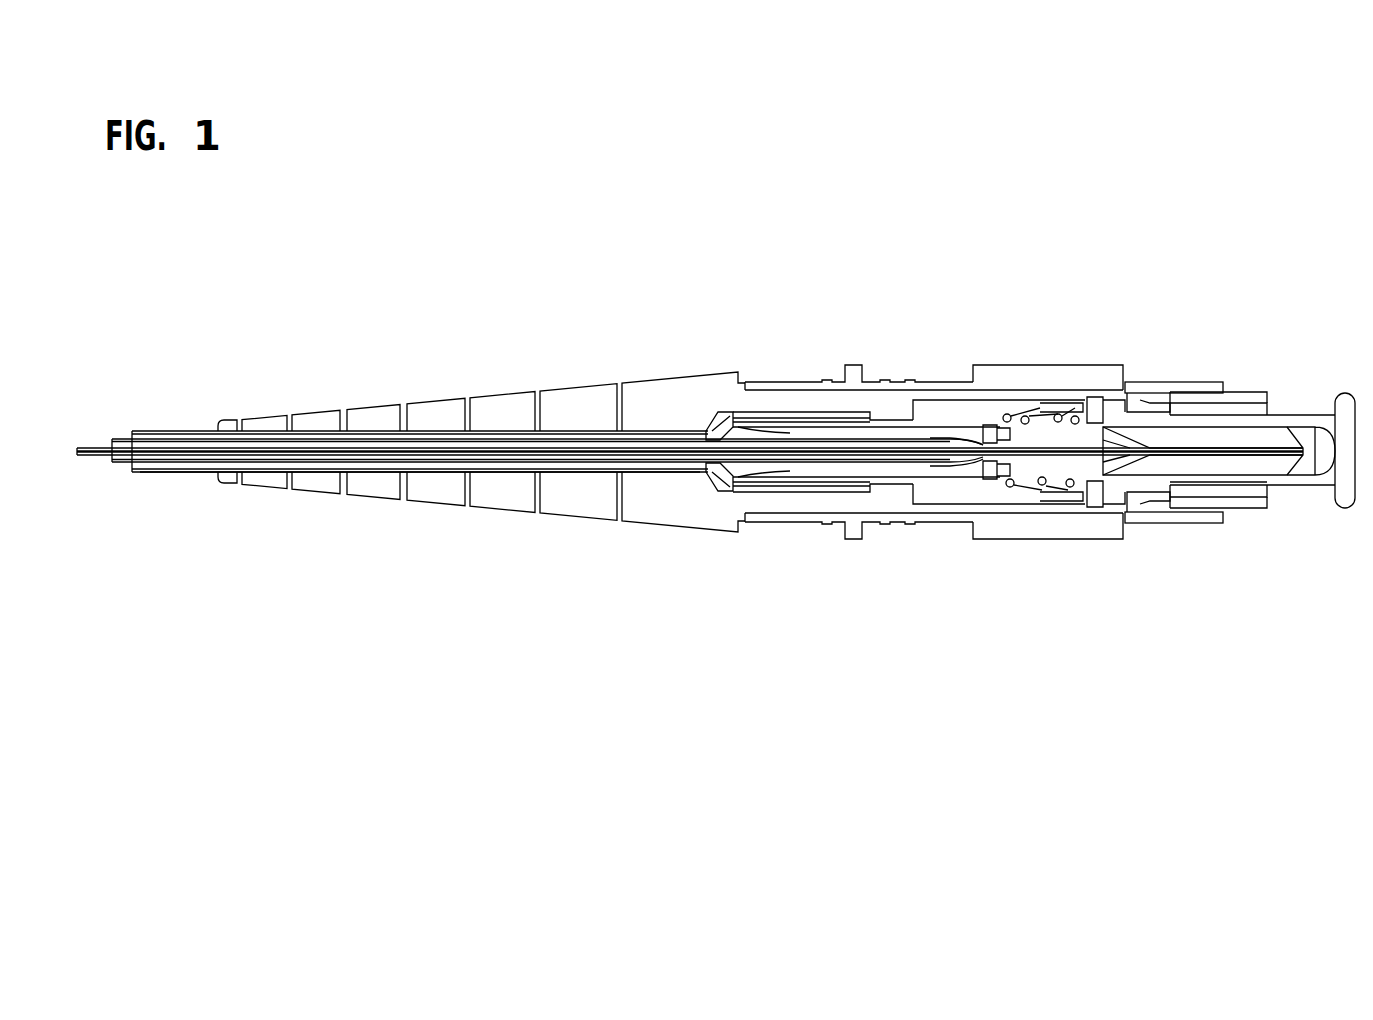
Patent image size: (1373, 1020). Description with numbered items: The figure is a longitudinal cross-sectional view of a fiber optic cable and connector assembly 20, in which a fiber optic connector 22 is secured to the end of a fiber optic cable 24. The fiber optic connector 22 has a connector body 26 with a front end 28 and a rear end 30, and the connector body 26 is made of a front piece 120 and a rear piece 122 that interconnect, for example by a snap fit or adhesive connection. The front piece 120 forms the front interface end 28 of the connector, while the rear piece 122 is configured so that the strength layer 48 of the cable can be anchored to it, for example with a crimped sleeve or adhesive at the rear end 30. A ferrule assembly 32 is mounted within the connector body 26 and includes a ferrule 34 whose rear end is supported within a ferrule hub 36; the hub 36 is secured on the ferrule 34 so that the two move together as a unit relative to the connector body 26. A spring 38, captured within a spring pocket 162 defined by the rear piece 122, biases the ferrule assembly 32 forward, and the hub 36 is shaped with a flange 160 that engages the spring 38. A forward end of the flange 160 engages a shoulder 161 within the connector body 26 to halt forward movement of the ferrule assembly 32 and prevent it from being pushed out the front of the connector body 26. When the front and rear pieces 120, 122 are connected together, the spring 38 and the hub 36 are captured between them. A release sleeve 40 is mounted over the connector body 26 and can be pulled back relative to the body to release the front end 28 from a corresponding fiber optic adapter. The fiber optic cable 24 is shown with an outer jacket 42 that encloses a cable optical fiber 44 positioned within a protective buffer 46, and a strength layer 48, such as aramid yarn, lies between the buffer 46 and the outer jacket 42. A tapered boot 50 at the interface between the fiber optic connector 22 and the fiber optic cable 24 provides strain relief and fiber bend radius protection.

The fiber optic cable and connector assembly 20 is at (449, 213).
The fiber optic connector 22 is at (1004, 358).
The fiber optic cable 24 is at (168, 476).
The connector body 26 is at (1135, 396).
The front end 28 is at (1268, 404).
The rear end 30 is at (732, 479).
The ferrule assembly 32 is at (1082, 484).
The ferrule 34 is at (1210, 478).
The ferrule hub 36 is at (1113, 410).
The spring 38 is at (1007, 488).
The release sleeve 40 is at (1048, 365).
The outer jacket 42 is at (152, 432).
The cable optical fiber 44 is at (80, 455).
The protective buffer 46 is at (111, 446).
The strength layer 48 is at (717, 414).
The tapered boot 50 is at (500, 393).
The front piece 120 is at (1245, 511).
The rear piece 122 is at (925, 397).
The flange 160 is at (1082, 410).
The shoulder 161 is at (1160, 408).
The spring pocket 162 is at (1027, 483).